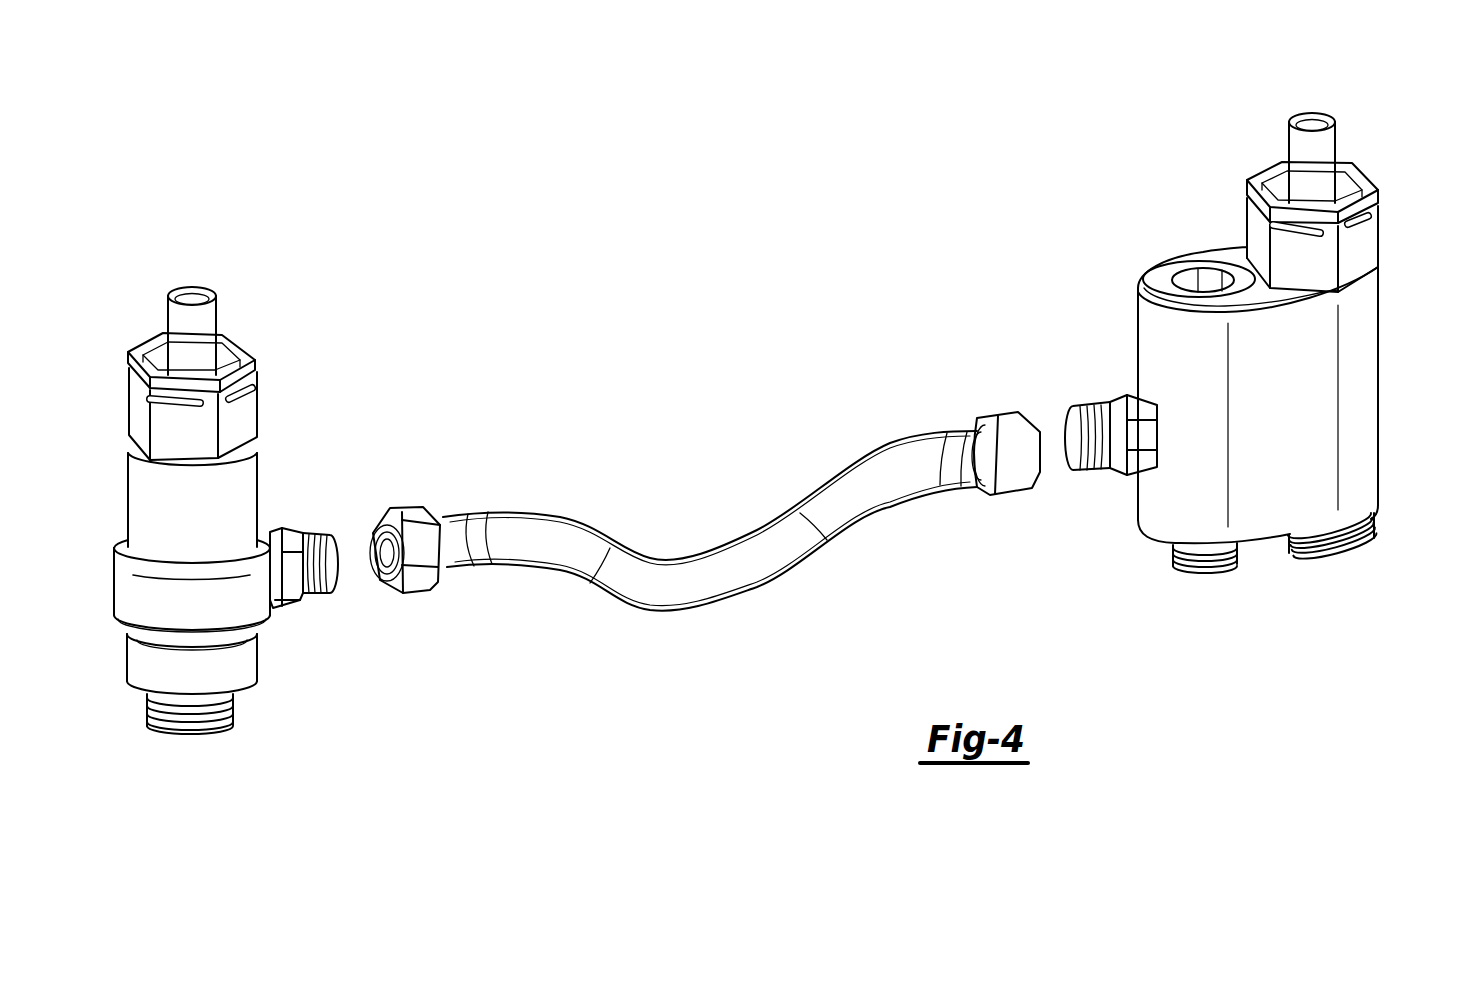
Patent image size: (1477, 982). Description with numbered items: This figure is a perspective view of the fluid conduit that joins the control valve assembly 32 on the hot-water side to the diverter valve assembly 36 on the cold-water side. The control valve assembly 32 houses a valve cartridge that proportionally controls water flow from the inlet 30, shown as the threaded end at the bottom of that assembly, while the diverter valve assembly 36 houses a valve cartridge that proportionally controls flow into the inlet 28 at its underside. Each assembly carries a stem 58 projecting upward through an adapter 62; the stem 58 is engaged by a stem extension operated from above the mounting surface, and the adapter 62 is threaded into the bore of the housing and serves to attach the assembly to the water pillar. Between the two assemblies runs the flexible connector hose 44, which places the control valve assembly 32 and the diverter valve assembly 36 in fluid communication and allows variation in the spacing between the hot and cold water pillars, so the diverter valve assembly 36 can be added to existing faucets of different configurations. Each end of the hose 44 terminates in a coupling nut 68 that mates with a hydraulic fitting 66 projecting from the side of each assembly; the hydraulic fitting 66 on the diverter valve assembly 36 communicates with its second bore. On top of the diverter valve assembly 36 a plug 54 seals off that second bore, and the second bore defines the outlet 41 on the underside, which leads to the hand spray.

The inlet 28 is at (1328, 567).
The inlet 30 is at (213, 733).
The control valve assembly 32 is at (225, 498).
The diverter valve assembly 36 is at (1350, 370).
The outlet 41 is at (1205, 575).
The flexible connector hose 44 is at (750, 580).
The plug 54 is at (1190, 278).
The stem 58 is at (210, 312).
The adapter 62 is at (250, 421).
The hydraulic fitting 66 is at (285, 597).
The hose coupling nut 68 is at (405, 513).